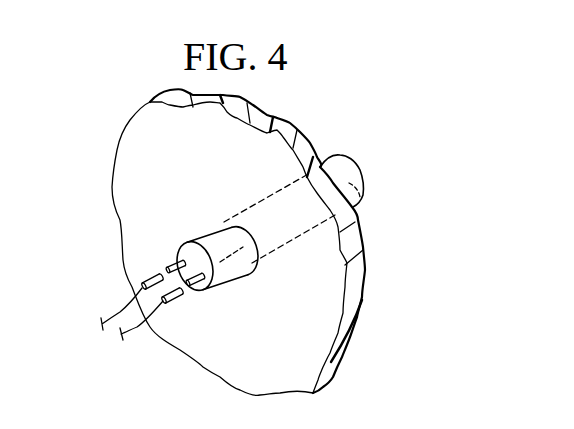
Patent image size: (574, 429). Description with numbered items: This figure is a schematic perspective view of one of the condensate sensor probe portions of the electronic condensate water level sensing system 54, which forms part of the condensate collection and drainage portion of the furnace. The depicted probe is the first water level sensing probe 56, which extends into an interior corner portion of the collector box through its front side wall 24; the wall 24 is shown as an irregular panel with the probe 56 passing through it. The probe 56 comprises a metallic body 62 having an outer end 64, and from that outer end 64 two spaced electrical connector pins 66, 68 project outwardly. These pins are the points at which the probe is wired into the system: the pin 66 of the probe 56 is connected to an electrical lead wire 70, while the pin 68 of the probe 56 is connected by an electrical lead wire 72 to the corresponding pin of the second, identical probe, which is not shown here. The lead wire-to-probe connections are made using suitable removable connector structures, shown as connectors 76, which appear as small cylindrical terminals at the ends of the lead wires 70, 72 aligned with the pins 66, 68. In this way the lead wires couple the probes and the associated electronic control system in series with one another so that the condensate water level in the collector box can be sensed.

The front side wall 24 is at (365, 292).
The electronic condensate water level sensing system 54 is at (102, 119).
The first water level sensing probe 56 is at (348, 154).
The metallic body 62 is at (365, 188).
The outer end 64 is at (188, 241).
The electrical connector pin 66 is at (167, 268).
The electrical connector pin 68 is at (203, 286).
The electrical lead wire 70 is at (112, 316).
The electrical lead wire 72 is at (131, 333).
The connectors 76 is at (140, 283).